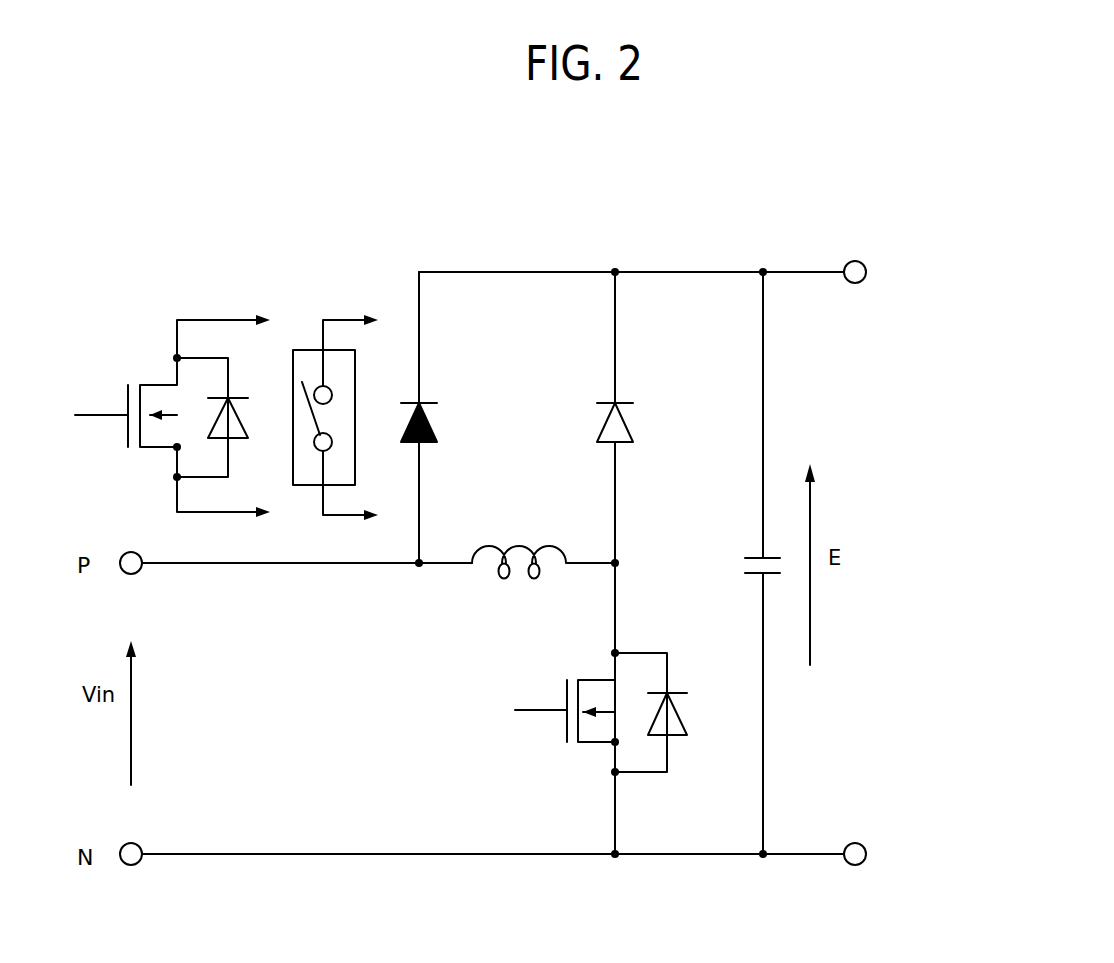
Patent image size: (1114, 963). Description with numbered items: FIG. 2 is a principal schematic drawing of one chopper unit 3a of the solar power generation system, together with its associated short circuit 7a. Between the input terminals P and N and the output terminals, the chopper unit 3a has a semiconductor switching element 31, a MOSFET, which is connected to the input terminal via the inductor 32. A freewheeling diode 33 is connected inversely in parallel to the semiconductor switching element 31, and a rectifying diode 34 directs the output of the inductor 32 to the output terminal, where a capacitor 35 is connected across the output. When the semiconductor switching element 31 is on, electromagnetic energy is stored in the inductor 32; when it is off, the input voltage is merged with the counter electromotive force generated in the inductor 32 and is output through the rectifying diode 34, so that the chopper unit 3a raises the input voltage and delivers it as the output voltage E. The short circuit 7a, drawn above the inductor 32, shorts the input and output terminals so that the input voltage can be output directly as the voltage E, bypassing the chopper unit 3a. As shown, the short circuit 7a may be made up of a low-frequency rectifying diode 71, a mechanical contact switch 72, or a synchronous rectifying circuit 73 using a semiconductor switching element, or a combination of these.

The short circuit 7a is at (402, 241).
The chopper unit 3a is at (887, 383).
The synchronous rectifying circuit 73 is at (155, 382).
The mechanical contact switch 72 is at (308, 348).
The low-frequency rectifying diode 71 is at (442, 395).
The rectifying diode 34 is at (637, 423).
The inductor 32 is at (497, 580).
The semiconductor switching element 31 is at (553, 720).
The freewheeling diode 33 is at (678, 682).
The capacitor 35 is at (770, 594).